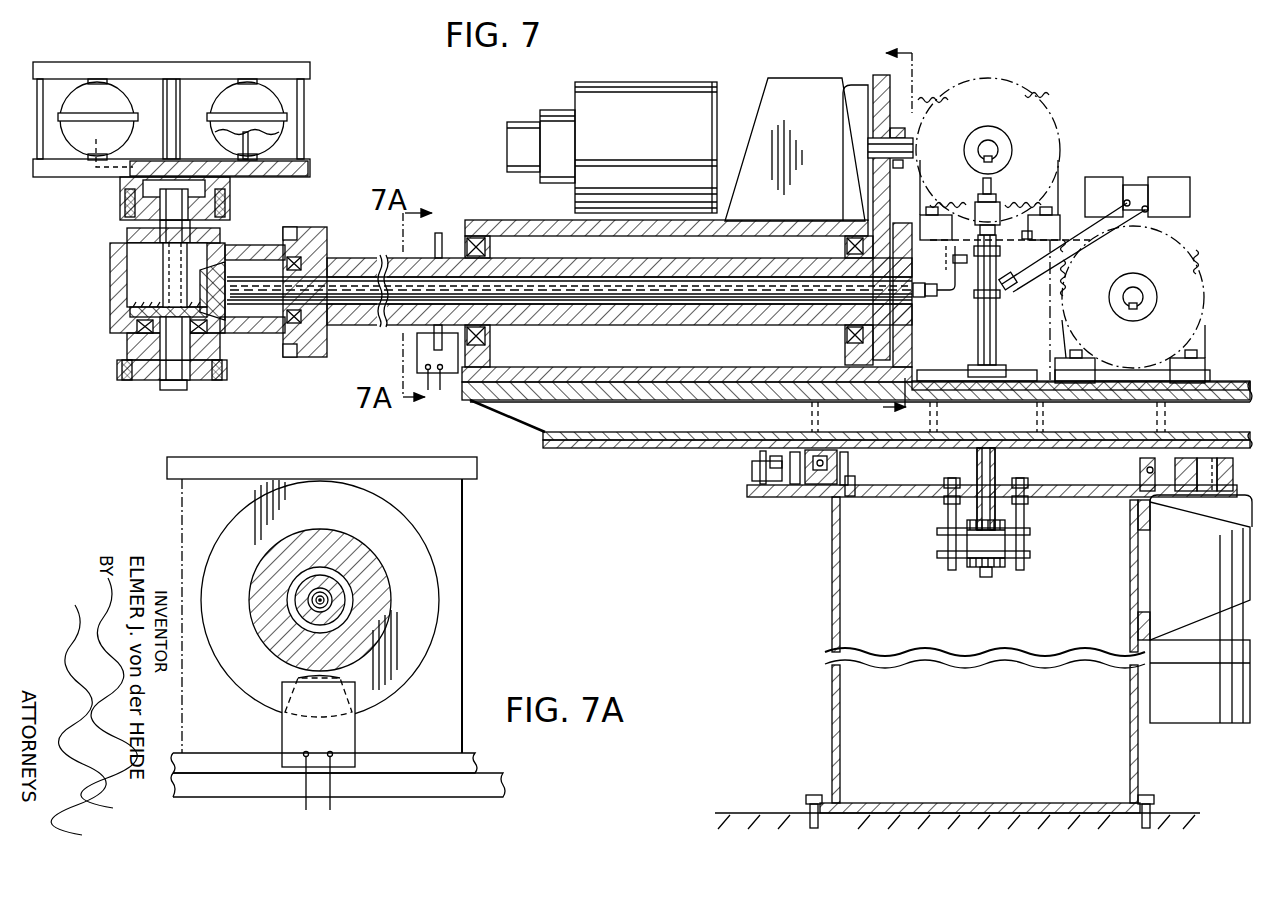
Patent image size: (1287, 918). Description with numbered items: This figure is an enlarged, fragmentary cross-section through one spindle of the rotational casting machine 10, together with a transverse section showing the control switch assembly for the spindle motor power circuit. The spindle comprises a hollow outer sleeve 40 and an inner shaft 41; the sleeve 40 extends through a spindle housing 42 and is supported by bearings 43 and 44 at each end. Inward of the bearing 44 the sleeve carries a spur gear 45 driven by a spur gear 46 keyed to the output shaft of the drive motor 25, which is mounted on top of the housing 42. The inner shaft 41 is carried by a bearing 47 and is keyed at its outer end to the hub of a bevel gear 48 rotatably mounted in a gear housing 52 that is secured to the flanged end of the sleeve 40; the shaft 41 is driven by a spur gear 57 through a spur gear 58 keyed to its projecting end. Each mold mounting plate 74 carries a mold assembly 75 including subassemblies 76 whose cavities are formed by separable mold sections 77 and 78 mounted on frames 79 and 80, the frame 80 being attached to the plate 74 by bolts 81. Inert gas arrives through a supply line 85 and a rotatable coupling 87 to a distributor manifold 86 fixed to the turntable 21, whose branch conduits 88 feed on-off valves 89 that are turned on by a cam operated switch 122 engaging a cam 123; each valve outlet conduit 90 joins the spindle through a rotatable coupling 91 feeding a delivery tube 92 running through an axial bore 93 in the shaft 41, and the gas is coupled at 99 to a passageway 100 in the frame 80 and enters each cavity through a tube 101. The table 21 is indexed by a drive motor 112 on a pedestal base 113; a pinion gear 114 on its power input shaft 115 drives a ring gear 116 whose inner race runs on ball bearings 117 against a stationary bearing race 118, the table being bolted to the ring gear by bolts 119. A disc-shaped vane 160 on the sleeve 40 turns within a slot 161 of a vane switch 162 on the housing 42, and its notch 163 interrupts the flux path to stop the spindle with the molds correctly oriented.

In FIG. 7, the section line 10 is at (890, 225).
In FIG. 7, the turntable 21 is at (1215, 382).
In FIG. 7A, the turntable 21 is at (240, 795).
In FIG. 7, the drive motor 25 is at (686, 82).
In FIG. 7, the outer sleeve 40 is at (405, 257).
In FIG. 7A, the outer sleeve 40 is at (392, 596).
In FIG. 7, the inner shaft 41 is at (395, 305).
In FIG. 7A, the inner shaft 41 is at (335, 612).
In FIG. 7, the spindle housing 42 is at (505, 222).
In FIG. 7A, the spindle housing 42 is at (462, 532).
In FIG. 7, the bearing 43 is at (488, 248).
In FIG. 7, the bearing 44 is at (846, 245).
In FIG. 7, the spur gear 45 is at (868, 222).
In FIG. 7, the spur gear 46 is at (880, 78).
In FIG. 7, the bearing 47 is at (870, 302).
In FIG. 7, the bevel gear 48 is at (222, 248).
In FIG. 7, the gear housing 52 is at (237, 334).
In FIG. 7, the spur gear 57 is at (1205, 250).
In FIG. 7, the spur gear 58 is at (905, 350).
In FIG. 7, the mold mounting plate 74 is at (120, 207).
In FIG. 7, the mold assembly 75 is at (323, 91).
In FIG. 7, the subassembly 76 is at (134, 98).
In FIG. 7, the mold section 77 is at (110, 88).
In FIG. 7, the mold section 78 is at (75, 152).
In FIG. 7, the frame 79 is at (213, 62).
In FIG. 7, the frame 80 is at (266, 179).
In FIG. 7, the bolt 81 is at (123, 222).
In FIG. 7, the supply line 85 is at (992, 185).
In FIG. 7, the distributor manifold 86 is at (997, 318).
In FIG. 7, the rotatable coupling 87 is at (980, 212).
In FIG. 7, the branch conduit 88 is at (1108, 177).
In FIG. 7, the on-off valve 89 is at (1180, 177).
In FIG. 7, the outlet conduit 90 is at (963, 265).
In FIG. 7, the rotatable coupling 91 is at (947, 310).
In FIG. 7, the delivery tube 92 is at (627, 298).
In FIG. 7A, the delivery tube 92 is at (327, 590).
In FIG. 7, the axial bore 93 is at (703, 300).
In FIG. 7A, the axial bore 93 is at (313, 605).
In FIG. 7, the coupling 99 is at (217, 181).
In FIG. 7, the passageway 100 is at (200, 150).
In FIG. 7, the tube 101 is at (252, 148).
In FIG. 7, the drive motor 112 is at (1212, 712).
In FIG. 7, the pedestal base 113 is at (832, 586).
In FIG. 7, the pinion gear 114 is at (1235, 470).
In FIG. 7, the power input shaft 115 is at (1228, 432).
In FIG. 7, the ring gear 116 is at (800, 498).
In FIG. 7, the ball bearing 117 is at (818, 490).
In FIG. 7, the stationary bearing race 118 is at (838, 466).
In FIG. 7, the bolt 119 is at (806, 410).
In FIG. 7, the cam operated switch 122 is at (762, 498).
In FIG. 7, the cam 123 is at (752, 480).
In FIG. 7, the vane 160 is at (438, 233).
In FIG. 7A, the vane 160 is at (402, 508).
In FIG. 7, the slot 161 is at (418, 348).
In FIG. 7, the vane switch 162 is at (441, 375).
In FIG. 7A, the vane switch 162 is at (355, 730).
In FIG. 7, the notch 163 is at (442, 347).
In FIG. 7A, the notch 163 is at (290, 720).